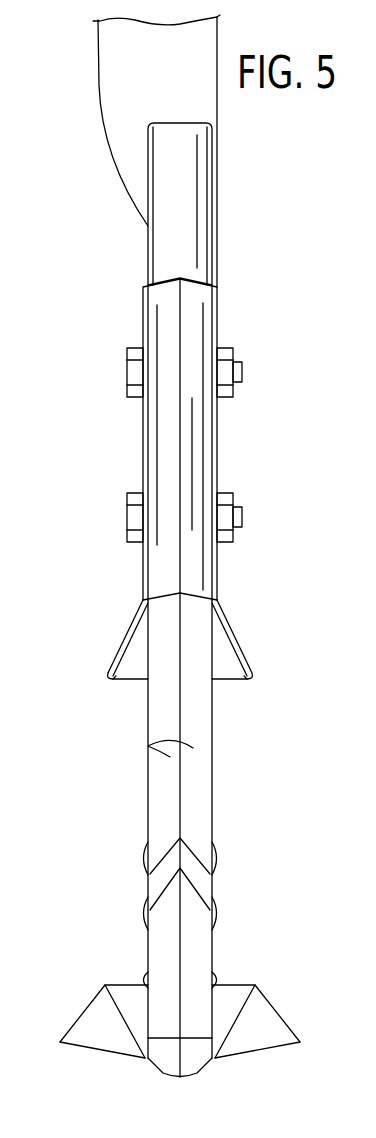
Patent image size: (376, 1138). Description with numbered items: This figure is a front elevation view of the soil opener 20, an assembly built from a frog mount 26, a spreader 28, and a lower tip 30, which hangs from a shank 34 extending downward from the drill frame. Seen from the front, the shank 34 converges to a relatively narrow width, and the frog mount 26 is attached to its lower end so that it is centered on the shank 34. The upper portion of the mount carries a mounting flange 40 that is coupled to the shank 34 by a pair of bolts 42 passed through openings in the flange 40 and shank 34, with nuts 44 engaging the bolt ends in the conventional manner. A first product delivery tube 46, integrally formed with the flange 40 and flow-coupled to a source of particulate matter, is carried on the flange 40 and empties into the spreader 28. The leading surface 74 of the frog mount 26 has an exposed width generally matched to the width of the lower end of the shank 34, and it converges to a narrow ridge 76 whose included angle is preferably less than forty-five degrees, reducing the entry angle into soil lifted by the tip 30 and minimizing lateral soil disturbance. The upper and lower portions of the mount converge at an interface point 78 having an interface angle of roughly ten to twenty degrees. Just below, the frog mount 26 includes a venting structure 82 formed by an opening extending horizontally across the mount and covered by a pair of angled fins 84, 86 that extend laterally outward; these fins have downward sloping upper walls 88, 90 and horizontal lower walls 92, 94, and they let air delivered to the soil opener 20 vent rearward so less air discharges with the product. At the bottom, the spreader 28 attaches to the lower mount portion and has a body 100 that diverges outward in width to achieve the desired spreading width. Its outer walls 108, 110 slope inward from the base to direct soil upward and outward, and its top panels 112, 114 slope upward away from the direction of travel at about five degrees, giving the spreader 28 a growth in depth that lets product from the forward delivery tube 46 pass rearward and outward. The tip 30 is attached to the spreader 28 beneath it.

The soil opener 20 is at (68, 185).
The frog mount 26 is at (140, 799).
The spreader 28 is at (74, 1055).
The lower tip 30 is at (142, 1072).
The shank 34 is at (108, 59).
The mounting flange 40 is at (143, 446).
The bolts 42 is at (138, 352).
The nuts 44 is at (222, 352).
The first product delivery tube 46 is at (200, 196).
The leading surface 74 is at (148, 746).
The narrow ridge 76 is at (181, 780).
The interface point 78 is at (186, 588).
The venting structure 82 is at (109, 639).
The angled fin 84 is at (135, 636).
The angled fin 86 is at (232, 660).
The downward sloping upper wall 88 is at (110, 664).
The downward sloping upper wall 90 is at (236, 632).
The horizontal lower wall 92 is at (132, 680).
The horizontal lower wall 94 is at (232, 680).
The body 100 is at (240, 992).
The outer wall 108 is at (92, 1010).
The outer wall 110 is at (267, 1037).
The top panel 112 is at (122, 992).
The top panel 114 is at (233, 1010).